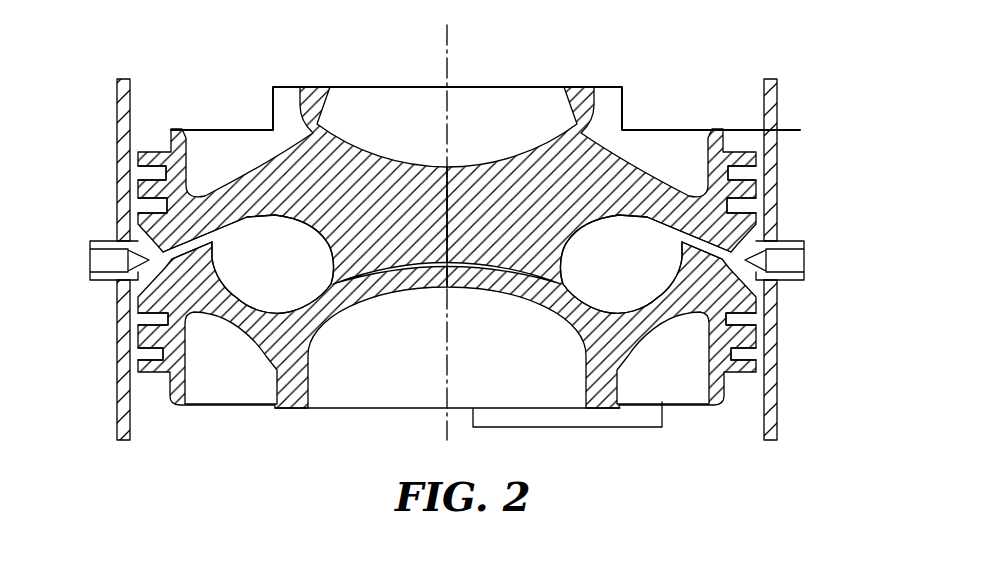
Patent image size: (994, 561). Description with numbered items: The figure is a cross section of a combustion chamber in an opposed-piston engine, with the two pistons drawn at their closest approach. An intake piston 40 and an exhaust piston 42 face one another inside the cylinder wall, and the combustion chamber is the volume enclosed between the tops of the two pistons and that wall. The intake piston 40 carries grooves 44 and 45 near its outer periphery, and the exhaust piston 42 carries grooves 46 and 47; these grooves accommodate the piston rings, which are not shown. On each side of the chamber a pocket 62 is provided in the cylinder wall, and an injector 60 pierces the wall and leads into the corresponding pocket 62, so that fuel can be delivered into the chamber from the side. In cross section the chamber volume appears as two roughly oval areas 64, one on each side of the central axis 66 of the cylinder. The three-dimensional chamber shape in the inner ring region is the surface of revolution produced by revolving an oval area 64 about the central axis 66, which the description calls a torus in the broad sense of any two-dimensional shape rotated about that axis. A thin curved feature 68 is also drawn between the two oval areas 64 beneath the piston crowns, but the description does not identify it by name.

The intake piston 40 is at (428, 85).
The exhaust piston 42 is at (430, 410).
The groove 44 is at (145, 208).
The groove 45 is at (143, 173).
The groove 46 is at (145, 318).
The groove 47 is at (145, 353).
The injector 60 is at (103, 280).
The pocket 62 is at (148, 244).
The oval area 64 is at (276, 276).
The central axis 66 is at (449, 38).
The undercrown cooling slot 68 is at (334, 283).